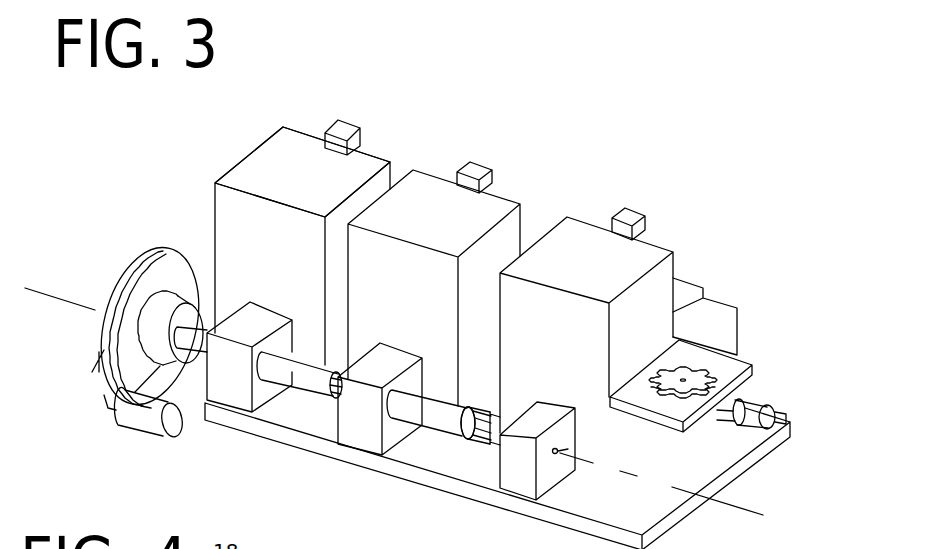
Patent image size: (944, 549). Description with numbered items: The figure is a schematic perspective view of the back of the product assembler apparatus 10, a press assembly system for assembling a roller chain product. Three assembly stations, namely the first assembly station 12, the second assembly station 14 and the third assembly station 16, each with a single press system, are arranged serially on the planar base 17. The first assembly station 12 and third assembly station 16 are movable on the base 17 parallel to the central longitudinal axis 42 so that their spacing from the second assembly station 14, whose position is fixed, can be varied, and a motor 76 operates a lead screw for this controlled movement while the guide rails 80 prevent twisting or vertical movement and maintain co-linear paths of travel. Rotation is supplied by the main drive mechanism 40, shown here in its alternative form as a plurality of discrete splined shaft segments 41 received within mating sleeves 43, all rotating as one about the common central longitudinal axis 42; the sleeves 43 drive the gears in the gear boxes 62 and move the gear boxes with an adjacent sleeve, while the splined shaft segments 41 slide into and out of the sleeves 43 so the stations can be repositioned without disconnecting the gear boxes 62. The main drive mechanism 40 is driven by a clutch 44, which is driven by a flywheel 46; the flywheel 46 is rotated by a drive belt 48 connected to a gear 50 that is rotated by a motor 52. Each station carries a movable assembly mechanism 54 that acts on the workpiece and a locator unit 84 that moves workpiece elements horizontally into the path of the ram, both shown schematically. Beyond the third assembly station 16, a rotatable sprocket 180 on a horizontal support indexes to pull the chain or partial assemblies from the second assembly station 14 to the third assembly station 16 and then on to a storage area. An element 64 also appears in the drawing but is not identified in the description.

The product assembler apparatus 10 is at (238, 171).
The first assembly station 12 is at (283, 136).
The second assembly station 14 is at (433, 182).
The third assembly station 16 is at (578, 237).
The planar base 17 is at (752, 465).
The main drive mechanism 40 is at (463, 450).
The splined shaft segments 41 is at (338, 383).
The central longitudinal axis 42 is at (25, 288).
The sleeves 43 is at (298, 365).
The clutch 44 is at (195, 268).
The flywheel 46 is at (142, 258).
The drive belt 48 is at (98, 376).
The gear 50 is at (101, 408).
The motor 52 is at (160, 440).
The movable assembly mechanism 54 is at (338, 130).
The gear box 62 is at (240, 400).
The splined coupling 64 is at (483, 425).
The motor 76 is at (755, 408).
The guide rails 80 is at (787, 420).
The locator unit 84 is at (690, 285).
The rotatable sprocket 180 is at (705, 375).